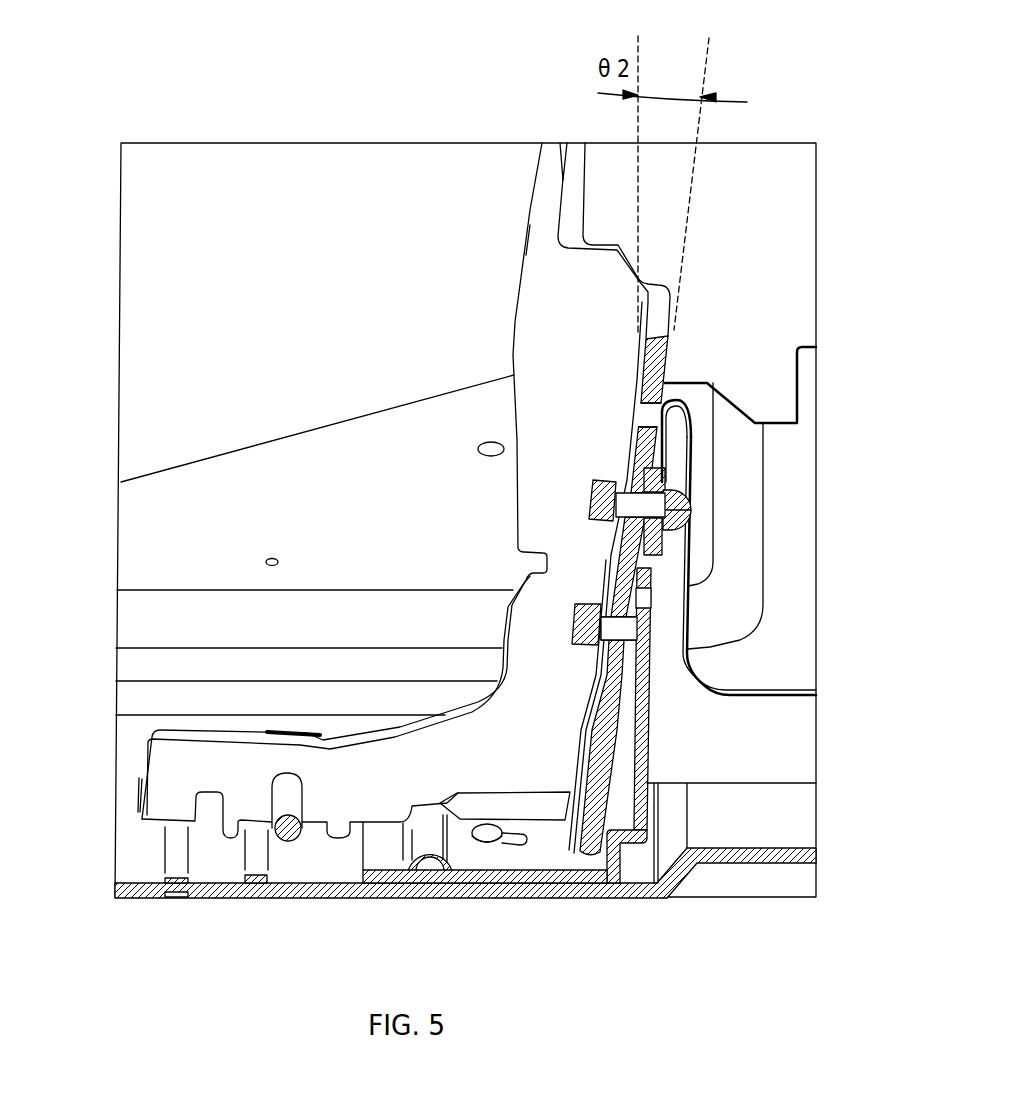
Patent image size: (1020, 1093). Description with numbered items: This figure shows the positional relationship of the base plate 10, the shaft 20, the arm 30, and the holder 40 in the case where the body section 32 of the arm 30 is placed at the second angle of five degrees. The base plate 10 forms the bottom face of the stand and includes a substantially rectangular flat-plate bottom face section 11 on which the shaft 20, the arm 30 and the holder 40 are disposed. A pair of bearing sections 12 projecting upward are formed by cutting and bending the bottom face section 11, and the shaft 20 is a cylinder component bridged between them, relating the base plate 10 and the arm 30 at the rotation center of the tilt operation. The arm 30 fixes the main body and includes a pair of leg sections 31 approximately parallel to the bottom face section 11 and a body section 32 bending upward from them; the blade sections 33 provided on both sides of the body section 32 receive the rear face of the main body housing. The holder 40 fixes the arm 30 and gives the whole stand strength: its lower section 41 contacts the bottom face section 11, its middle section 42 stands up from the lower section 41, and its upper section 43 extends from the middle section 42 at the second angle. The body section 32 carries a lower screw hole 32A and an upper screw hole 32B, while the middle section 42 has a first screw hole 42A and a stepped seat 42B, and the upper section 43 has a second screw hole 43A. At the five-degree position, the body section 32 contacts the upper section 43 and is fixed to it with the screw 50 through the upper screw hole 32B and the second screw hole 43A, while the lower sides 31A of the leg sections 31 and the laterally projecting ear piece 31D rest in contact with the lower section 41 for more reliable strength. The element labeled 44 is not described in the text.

The base plate 10 is at (62, 805).
The bottom face section 11 is at (127, 843).
The bearing section 12 is at (317, 733).
The shaft 20 is at (283, 847).
The arm 30 is at (534, 171).
The leg section 31 is at (436, 763).
The lower side of leg section 31A is at (375, 825).
The ear piece 31D is at (490, 803).
The body section 32 is at (668, 369).
The lower screw hole 32A is at (612, 630).
The upper screw hole 32B is at (668, 446).
The blade section 33 is at (560, 146).
The holder 40 is at (697, 555).
The lower section 41 is at (547, 843).
The middle section 42 is at (688, 665).
The first screw hole 42A is at (643, 600).
The stepped seat 42B is at (625, 828).
The upper section 43 is at (668, 472).
The second screw hole 43A is at (690, 490).
The floor step portion 44 is at (809, 751).
The screw 50 is at (680, 512).